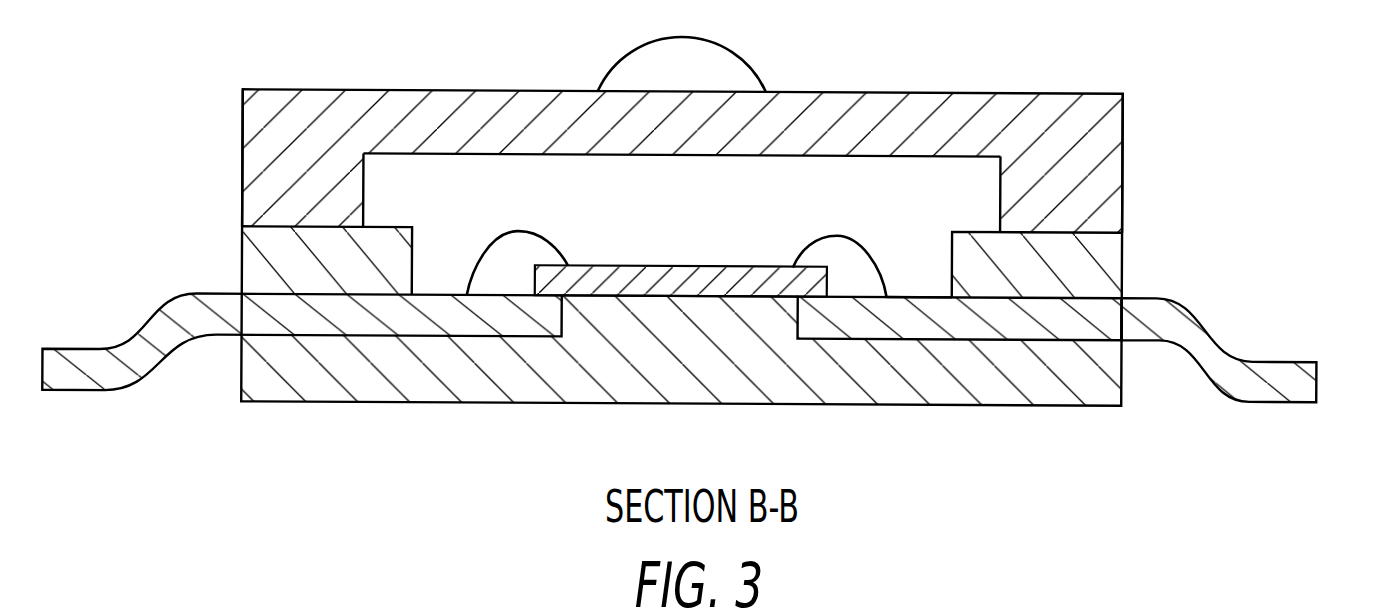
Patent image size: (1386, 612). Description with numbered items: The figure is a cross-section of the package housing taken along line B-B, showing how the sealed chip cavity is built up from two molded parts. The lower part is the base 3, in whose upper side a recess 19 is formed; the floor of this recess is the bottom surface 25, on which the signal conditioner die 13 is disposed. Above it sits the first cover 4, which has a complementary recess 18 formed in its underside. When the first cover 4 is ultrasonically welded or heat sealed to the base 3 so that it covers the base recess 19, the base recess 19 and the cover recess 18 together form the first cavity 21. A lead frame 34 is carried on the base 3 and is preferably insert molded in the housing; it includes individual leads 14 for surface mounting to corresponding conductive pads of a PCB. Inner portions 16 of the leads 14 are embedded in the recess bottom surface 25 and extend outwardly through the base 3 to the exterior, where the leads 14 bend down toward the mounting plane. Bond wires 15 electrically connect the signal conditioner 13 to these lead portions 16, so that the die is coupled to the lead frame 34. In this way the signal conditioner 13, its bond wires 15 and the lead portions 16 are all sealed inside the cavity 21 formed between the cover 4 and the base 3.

The base 3 is at (1082, 370).
The first cover 4 is at (1057, 93).
The signal conditioner die 13 is at (654, 265).
The leads 14 is at (157, 312).
The bond wires 15 is at (858, 245).
The lead portions 16 is at (848, 317).
The first cover recess 18 is at (435, 193).
The base recess 19 is at (917, 268).
The first cavity 21 is at (556, 204).
The recess bottom surface 25 is at (604, 298).
The lead frame 34 is at (1147, 281).